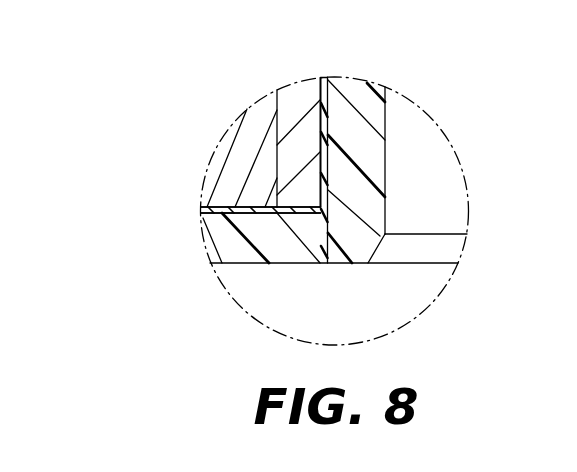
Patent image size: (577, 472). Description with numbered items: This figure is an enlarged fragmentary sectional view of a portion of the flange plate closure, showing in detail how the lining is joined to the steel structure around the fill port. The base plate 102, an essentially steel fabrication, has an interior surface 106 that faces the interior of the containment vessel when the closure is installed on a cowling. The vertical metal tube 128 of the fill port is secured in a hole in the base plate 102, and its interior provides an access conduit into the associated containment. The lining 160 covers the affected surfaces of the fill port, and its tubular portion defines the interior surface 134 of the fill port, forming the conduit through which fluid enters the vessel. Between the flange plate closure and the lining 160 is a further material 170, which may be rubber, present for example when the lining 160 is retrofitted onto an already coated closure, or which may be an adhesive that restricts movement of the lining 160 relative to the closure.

The base plate 102 is at (237, 165).
The interior surface 106 is at (203, 227).
The vertical metal tube 128 is at (298, 93).
The interior surface of the fill port 134 is at (325, 127).
The lining 160 is at (372, 148).
The further material 170 is at (250, 214).